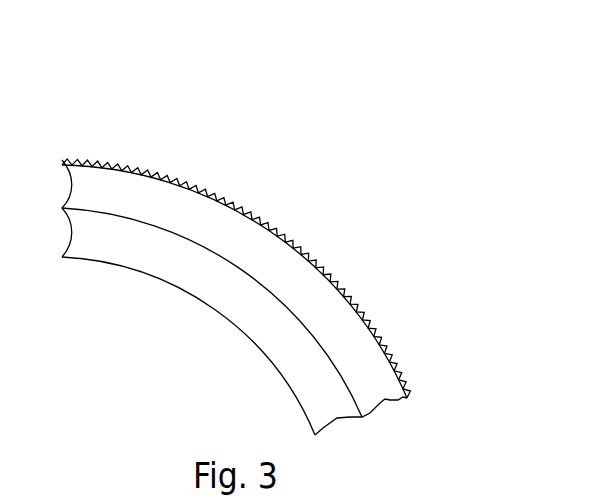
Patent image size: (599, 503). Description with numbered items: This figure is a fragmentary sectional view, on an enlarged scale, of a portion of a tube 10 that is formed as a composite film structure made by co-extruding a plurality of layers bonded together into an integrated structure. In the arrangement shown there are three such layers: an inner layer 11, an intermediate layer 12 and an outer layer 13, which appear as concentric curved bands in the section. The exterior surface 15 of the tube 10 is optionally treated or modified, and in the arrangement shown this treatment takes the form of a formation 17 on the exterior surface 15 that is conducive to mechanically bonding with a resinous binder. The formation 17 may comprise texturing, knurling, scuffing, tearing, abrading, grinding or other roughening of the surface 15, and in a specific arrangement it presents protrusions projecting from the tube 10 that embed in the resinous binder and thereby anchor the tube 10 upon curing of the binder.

The tube 10 is at (309, 252).
The inner layer 11 is at (302, 400).
The intermediate layer 12 is at (318, 340).
The outer layer 13 is at (343, 290).
The exterior surface 15 is at (240, 205).
The formation 17 is at (113, 163).